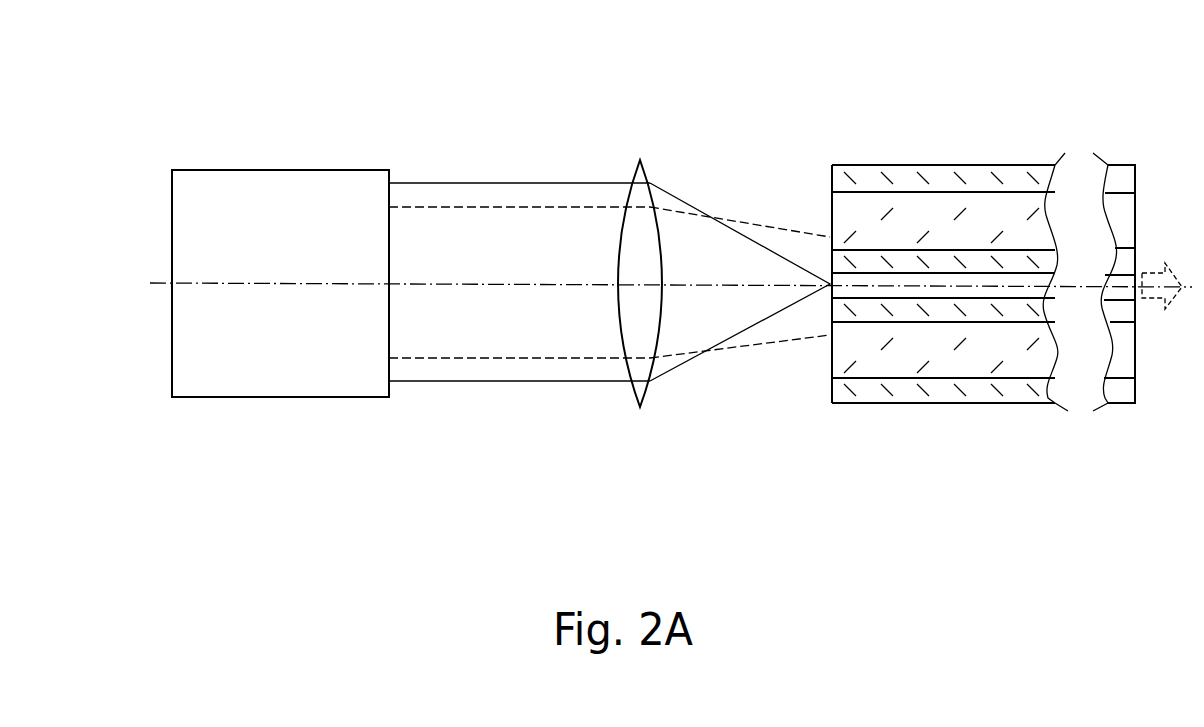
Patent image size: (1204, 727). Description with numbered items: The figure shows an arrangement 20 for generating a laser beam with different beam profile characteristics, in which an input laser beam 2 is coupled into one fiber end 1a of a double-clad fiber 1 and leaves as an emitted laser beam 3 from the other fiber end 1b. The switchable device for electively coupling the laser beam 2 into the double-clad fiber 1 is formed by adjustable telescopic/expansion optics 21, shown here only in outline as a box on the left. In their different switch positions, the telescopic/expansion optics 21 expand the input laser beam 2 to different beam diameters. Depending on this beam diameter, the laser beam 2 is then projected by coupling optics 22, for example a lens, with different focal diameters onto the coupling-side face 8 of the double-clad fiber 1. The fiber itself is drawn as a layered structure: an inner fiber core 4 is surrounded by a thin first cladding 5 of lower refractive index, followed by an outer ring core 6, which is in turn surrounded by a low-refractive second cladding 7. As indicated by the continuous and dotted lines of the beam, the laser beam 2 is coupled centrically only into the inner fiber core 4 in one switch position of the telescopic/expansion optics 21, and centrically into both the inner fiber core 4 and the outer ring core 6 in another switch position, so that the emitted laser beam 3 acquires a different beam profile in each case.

The arrangement 20 is at (584, 141).
The telescopic/expansion optics 21 is at (258, 400).
The input laser beam 2 is at (458, 382).
The coupling optics 22 is at (643, 408).
The double-clad fiber 1 is at (982, 160).
The fiber end 1a is at (889, 164).
The other fiber end 1b is at (1125, 164).
The coupling-side face 8 is at (831, 217).
The inner fiber core 4 is at (865, 292).
The first cladding 5 is at (912, 312).
The outer ring core 6 is at (963, 355).
The second cladding 7 is at (1008, 397).
The emitted laser beam 3 is at (1155, 299).